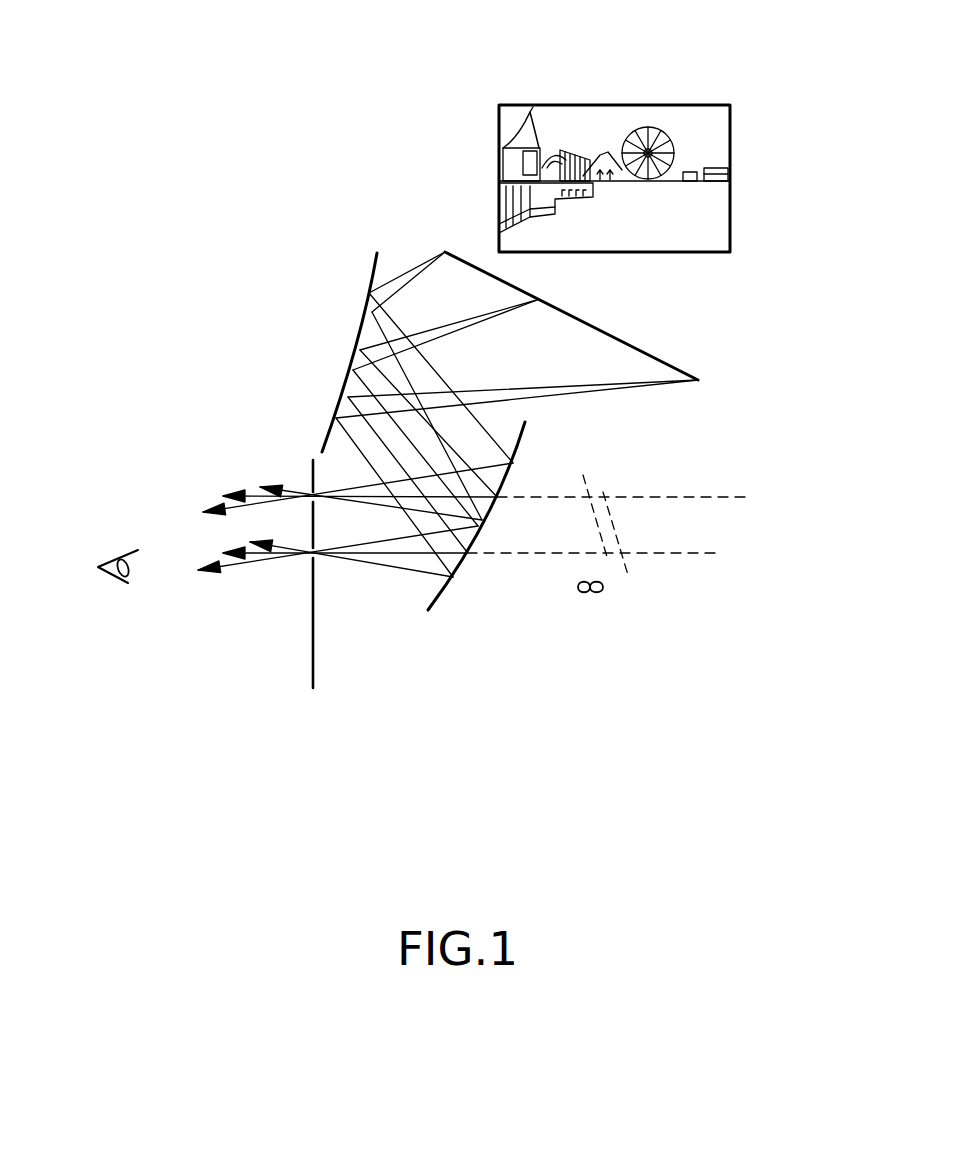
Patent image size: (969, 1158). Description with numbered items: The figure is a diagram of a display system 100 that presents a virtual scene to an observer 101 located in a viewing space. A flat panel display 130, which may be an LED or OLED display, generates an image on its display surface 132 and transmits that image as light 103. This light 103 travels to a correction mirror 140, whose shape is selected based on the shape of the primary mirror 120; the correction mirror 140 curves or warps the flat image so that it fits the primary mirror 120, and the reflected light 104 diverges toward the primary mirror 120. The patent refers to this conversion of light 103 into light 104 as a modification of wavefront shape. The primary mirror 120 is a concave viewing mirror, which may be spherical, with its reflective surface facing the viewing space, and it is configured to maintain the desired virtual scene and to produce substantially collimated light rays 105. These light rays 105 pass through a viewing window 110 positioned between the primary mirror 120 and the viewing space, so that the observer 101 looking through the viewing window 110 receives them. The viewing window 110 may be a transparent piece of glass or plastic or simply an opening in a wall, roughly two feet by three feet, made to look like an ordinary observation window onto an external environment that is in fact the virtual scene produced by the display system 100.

The display system 100 is at (287, 82).
The observer 101 is at (128, 646).
The light 103 is at (488, 318).
The light 104 is at (442, 451).
The light rays 105 is at (395, 536).
The viewing window 110 is at (311, 686).
The primary mirror 120 is at (430, 606).
The flat panel display 130 is at (742, 311).
The display surface 132 is at (700, 235).
The correction mirror 140 is at (373, 297).